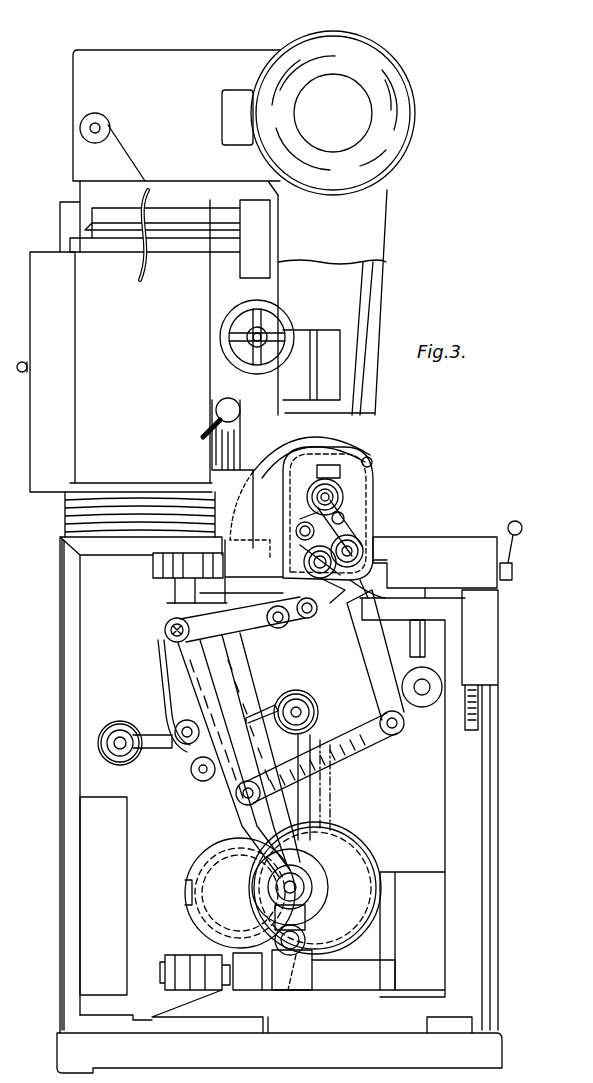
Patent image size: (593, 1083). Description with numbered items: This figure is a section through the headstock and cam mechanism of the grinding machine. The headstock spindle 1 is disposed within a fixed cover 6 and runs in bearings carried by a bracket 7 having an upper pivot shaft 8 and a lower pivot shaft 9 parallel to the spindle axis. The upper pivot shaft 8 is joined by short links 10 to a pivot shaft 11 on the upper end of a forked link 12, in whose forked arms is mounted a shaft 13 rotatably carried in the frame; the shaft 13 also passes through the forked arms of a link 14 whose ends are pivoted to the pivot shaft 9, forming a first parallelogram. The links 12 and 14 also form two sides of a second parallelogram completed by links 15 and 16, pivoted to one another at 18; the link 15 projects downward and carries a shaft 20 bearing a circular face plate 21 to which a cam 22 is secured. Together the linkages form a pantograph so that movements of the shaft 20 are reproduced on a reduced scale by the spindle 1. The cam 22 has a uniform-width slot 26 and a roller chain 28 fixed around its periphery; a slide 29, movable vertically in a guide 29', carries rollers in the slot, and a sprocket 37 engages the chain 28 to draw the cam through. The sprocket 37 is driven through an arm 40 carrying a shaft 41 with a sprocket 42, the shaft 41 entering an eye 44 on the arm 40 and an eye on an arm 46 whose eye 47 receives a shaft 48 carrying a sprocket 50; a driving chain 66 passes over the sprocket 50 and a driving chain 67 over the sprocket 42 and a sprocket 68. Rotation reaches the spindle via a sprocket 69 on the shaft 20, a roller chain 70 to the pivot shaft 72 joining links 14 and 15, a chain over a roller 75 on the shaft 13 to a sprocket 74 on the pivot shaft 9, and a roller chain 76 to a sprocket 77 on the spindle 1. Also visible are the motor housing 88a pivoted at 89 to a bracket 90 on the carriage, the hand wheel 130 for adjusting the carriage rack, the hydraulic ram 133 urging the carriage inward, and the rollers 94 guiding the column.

The housing 88a is at (140, 62).
The pivot 89 is at (101, 127).
The bracket 90 is at (95, 153).
The hand wheel 130 is at (220, 337).
The hydraulic ram 133 is at (212, 407).
The fixed cover 6 is at (372, 452).
The sprocket 77 is at (343, 491).
The spindle 1 is at (335, 500).
The upper pivot shaft 8 is at (345, 518).
The bracket 7 is at (370, 528).
The roller chain 76 is at (352, 524).
The sprocket 74 is at (364, 551).
The lower pivot shaft 9 is at (368, 570).
The short links 10 is at (300, 521).
The pivot shaft 11 is at (295, 529).
The shaft 13 is at (305, 560).
The rollers 94 is at (195, 577).
The pivot shaft 72 is at (158, 632).
The link 14 is at (262, 612).
The roller 75 is at (310, 619).
The forked link 12 is at (370, 668).
The roller chain 70 is at (215, 672).
The link 15 is at (228, 690).
The eye 44 is at (298, 702).
The shaft 41 is at (303, 710).
The sprocket 42 is at (308, 733).
The driving chain 66 is at (150, 716).
The sprocket 50 is at (113, 730).
The eye 47 is at (113, 756).
The shaft 48 is at (128, 757).
The arm 46 is at (163, 752).
The link 16 is at (377, 742).
The arm 40 is at (295, 795).
The driving chain 67 is at (322, 808).
The pivot 18 is at (240, 796).
The circular face plate 21 is at (318, 840).
The shaft 20 is at (282, 882).
The roller chain 28 is at (352, 866).
The cam 22 is at (375, 870).
The sprocket 69 is at (312, 893).
The slot 26 is at (195, 900).
The sprocket 37 is at (302, 956).
The guide 29' is at (353, 976).
The slide 29 is at (292, 986).
The sprocket 68 is at (293, 989).